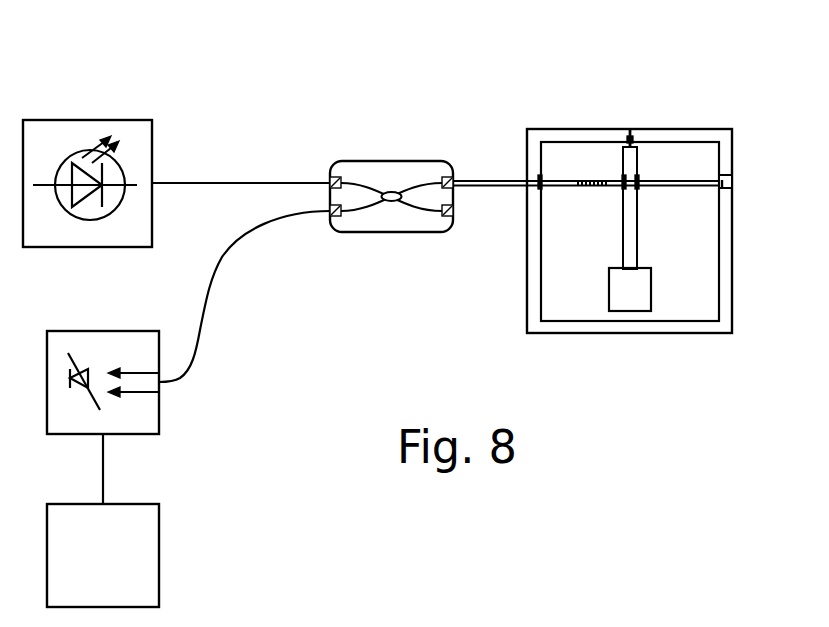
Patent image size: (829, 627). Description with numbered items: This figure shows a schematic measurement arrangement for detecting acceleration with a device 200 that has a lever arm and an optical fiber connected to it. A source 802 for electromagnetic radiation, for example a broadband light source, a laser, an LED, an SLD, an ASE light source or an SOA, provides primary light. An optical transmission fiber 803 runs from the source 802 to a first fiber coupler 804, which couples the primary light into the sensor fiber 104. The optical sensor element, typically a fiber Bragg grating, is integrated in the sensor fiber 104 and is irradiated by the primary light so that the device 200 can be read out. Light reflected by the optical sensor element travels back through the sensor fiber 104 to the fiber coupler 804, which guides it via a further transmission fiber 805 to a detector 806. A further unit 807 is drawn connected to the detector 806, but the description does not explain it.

The source 802 is at (147, 95).
The optical transmission fiber 803 is at (205, 183).
The first fiber coupler 804 is at (383, 160).
The transmission fiber 805 is at (212, 287).
The detector 806 is at (150, 417).
The processing unit 807 is at (152, 558).
The sensor fiber 104 is at (495, 186).
The device 200 is at (714, 95).